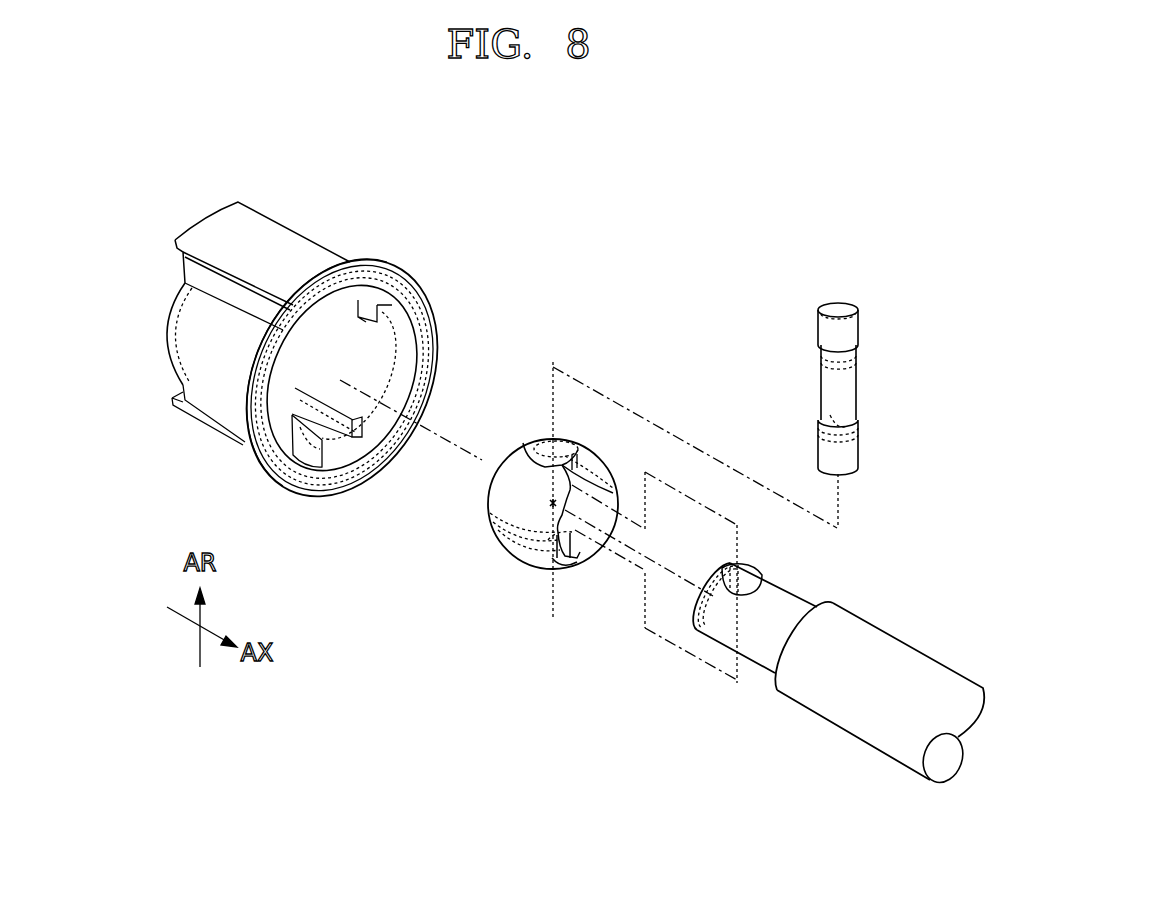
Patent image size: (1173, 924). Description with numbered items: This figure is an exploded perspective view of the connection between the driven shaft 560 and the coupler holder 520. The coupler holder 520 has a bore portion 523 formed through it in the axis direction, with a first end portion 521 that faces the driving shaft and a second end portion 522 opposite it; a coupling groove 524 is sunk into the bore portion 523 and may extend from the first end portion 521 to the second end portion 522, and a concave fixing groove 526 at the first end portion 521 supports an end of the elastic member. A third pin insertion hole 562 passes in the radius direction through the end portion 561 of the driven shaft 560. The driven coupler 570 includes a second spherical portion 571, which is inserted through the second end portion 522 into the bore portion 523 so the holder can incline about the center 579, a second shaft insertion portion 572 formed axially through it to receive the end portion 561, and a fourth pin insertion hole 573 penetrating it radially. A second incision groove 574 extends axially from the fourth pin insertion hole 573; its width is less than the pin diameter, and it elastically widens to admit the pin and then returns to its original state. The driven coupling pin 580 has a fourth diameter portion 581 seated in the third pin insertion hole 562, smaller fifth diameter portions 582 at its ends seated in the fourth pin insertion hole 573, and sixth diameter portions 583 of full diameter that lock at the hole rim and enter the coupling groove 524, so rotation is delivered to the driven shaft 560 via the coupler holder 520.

The coupler holder 520 is at (291, 341).
The first end portion 521 is at (162, 320).
The second end portion 522 is at (437, 312).
The bore portion 523 is at (372, 353).
The coupling groove 524 is at (397, 307).
The concave fixing groove 526 is at (173, 385).
The driven shaft 560 is at (838, 654).
The end portion 561 is at (783, 600).
The third pin insertion hole 562 is at (747, 580).
The driven coupler 570 is at (530, 510).
The second spherical portion 571 is at (508, 498).
The second shaft insertion portion 572 is at (577, 523).
The fourth pin insertion hole 573 is at (548, 455).
The second incision groove 574 is at (582, 487).
The center 579 is at (550, 508).
The driven coupling pin 580 is at (840, 349).
The fourth diameter portion 581 is at (827, 440).
The fifth diameter portion 582 is at (818, 417).
The sixth diameter portion 583 is at (858, 433).